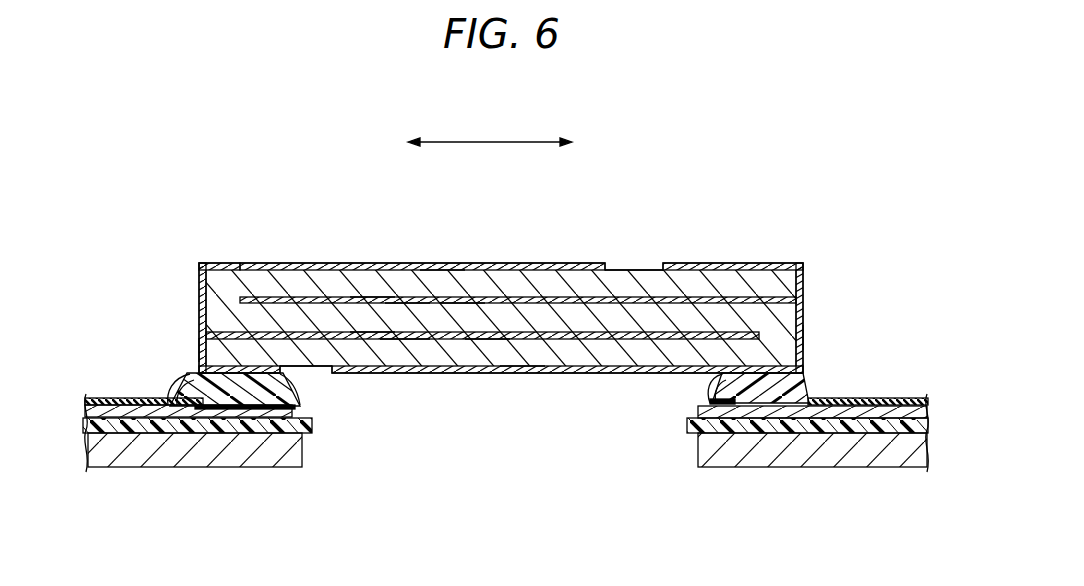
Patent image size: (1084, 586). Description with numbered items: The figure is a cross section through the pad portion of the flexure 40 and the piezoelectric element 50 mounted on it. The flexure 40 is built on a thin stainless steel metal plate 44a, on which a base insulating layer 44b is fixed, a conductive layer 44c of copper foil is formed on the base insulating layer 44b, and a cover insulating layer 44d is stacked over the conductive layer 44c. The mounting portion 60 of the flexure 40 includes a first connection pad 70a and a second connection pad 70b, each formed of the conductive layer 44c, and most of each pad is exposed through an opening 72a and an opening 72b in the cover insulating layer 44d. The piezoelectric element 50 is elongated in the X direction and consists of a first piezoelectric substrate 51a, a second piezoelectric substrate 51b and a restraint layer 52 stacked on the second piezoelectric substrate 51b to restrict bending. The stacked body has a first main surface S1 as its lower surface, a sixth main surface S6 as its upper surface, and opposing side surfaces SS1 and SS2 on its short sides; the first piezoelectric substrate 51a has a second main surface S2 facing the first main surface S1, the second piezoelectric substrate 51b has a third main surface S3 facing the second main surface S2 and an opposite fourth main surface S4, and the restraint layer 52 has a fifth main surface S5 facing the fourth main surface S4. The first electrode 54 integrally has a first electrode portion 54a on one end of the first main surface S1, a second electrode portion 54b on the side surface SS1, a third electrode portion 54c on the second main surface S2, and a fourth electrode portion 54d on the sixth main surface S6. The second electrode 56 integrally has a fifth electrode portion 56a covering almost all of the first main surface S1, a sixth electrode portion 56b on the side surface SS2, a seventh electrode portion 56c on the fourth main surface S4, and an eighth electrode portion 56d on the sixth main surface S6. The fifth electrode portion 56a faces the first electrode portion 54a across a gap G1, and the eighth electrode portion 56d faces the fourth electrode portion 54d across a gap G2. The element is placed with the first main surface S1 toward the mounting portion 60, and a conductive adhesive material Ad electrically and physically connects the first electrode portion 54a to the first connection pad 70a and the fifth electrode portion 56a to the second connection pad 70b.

The X direction X is at (490, 129).
The flexure 40 is at (707, 475).
The metal plate 44a is at (115, 450).
The base insulating layer 44b is at (143, 423).
The conductive layer 44c is at (88, 424).
The cover insulating layer 44d is at (97, 402).
The piezoelectric element 50 is at (560, 250).
The first piezoelectric substrate 51a is at (523, 355).
The second piezoelectric substrate 51b is at (488, 342).
The restraint layer 52 is at (488, 270).
The first electrode 54 is at (437, 273).
The first electrode portion 54a is at (236, 366).
The second electrode portion 54b is at (200, 284).
The third electrode portion 54c is at (268, 325).
The fourth electrode portion 54d is at (303, 268).
The second electrode 56 is at (571, 318).
The fifth electrode portion 56a is at (573, 373).
The sixth electrode portion 56b is at (800, 312).
The seventh electrode portion 56c is at (708, 297).
The eighth electrode portion 56d is at (762, 268).
The mounting portion 60 is at (665, 460).
The first connection pad 70a is at (252, 430).
The second connection pad 70b is at (748, 423).
The opening 72a is at (203, 413).
The opening 72b is at (804, 391).
The conductive adhesive material Ad is at (293, 387).
The gap G1 is at (310, 372).
The gap G2 is at (640, 267).
The first main surface S1 is at (408, 340).
The second main surface S2 is at (367, 334).
The third main surface S3 is at (462, 325).
The fourth main surface S4 is at (372, 298).
The fifth main surface S5 is at (400, 305).
The sixth main surface S6 is at (441, 269).
The side surface SS1 is at (198, 350).
The side surface SS2 is at (798, 337).